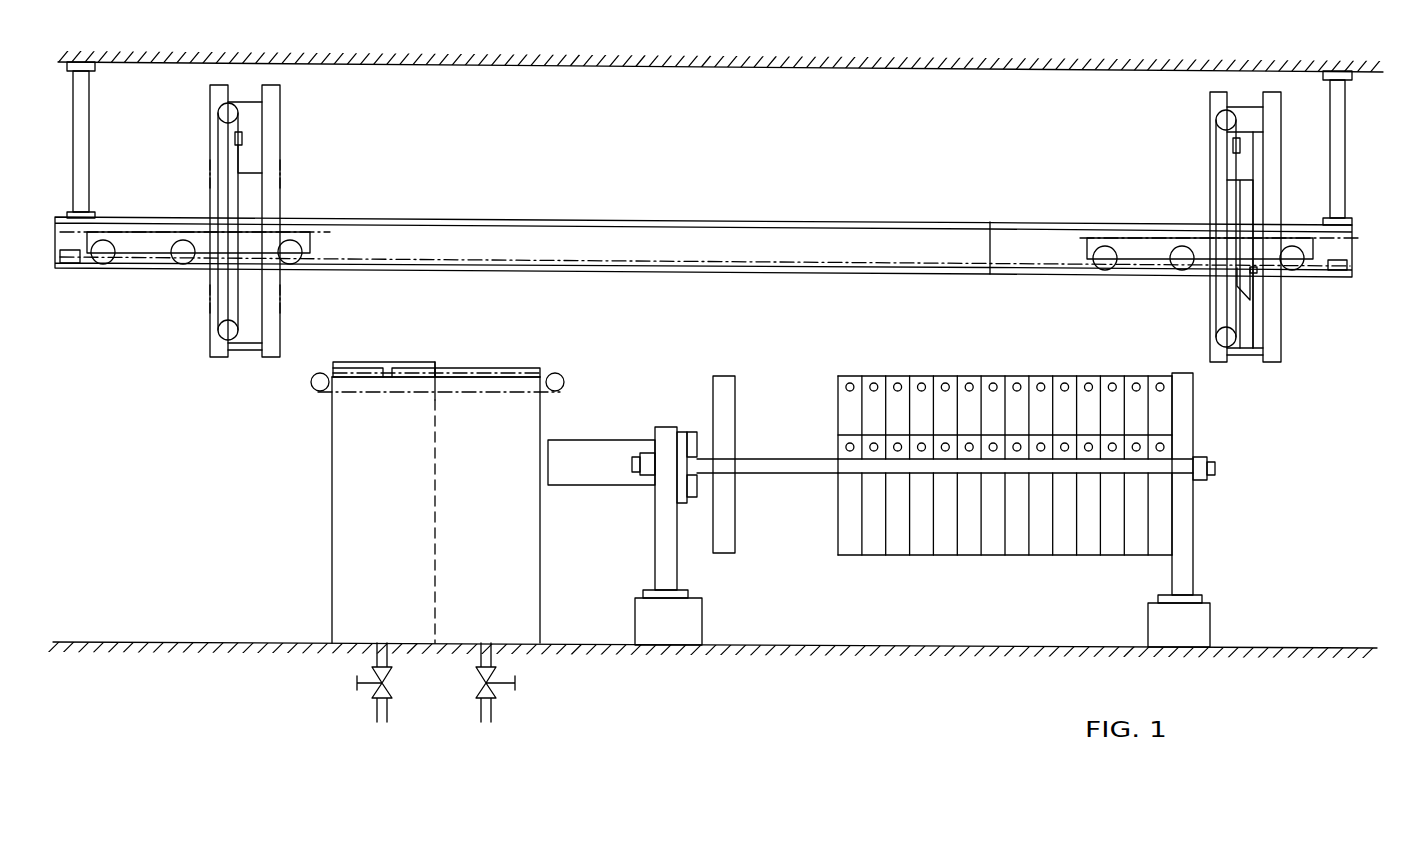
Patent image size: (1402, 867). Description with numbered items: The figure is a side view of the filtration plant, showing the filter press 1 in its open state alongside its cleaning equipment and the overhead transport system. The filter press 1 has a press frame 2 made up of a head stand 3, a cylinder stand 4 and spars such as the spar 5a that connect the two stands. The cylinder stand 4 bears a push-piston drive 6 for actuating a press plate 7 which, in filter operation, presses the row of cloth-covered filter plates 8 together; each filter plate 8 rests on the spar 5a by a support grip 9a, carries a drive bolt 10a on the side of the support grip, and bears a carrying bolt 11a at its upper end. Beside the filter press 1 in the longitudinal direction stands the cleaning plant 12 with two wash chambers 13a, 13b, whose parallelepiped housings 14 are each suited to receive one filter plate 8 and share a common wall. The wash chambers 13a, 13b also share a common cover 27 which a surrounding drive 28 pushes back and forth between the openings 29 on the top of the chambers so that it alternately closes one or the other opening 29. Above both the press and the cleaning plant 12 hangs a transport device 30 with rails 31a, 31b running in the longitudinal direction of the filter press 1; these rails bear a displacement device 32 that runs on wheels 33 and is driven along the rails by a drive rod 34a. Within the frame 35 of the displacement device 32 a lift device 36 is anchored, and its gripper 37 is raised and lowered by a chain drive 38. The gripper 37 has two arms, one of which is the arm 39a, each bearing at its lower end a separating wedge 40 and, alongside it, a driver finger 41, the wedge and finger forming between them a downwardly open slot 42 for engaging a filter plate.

The filter press 1 is at (921, 618).
The press frame 2 is at (1211, 510).
The head stand 3 is at (1185, 517).
The cylinder stand 4 is at (665, 427).
The spar 5a is at (758, 459).
The push-piston drive 6 is at (592, 450).
The press plate 7 is at (722, 376).
The filter plates 8 is at (975, 439).
The support grip 9a is at (845, 435).
The drive bolt 10a is at (840, 455).
The carrying bolt 11a is at (845, 387).
The cleaning plant 12 is at (300, 672).
The wash chamber 13a is at (542, 557).
The wash chamber 13b is at (336, 545).
The housings 14 is at (443, 502).
The cover 27 is at (413, 362).
The surrounding drive 28 is at (316, 390).
The openings 29 is at (477, 368).
The transport device 30 is at (1260, 256).
The rail 31a is at (936, 235).
The rail 31b is at (1016, 235).
The displacement device 32 is at (1260, 227).
The wheels 33 is at (1103, 245).
The drive rod 34a is at (838, 257).
The frame 35 is at (1273, 143).
The lift device 36 is at (1255, 167).
The gripper 37 is at (1257, 197).
The chain drive 38 is at (1214, 137).
The arm 39a is at (1245, 212).
The separating wedge 40 is at (1228, 290).
The driver finger 41 is at (1282, 289).
The slot 42 is at (1255, 275).